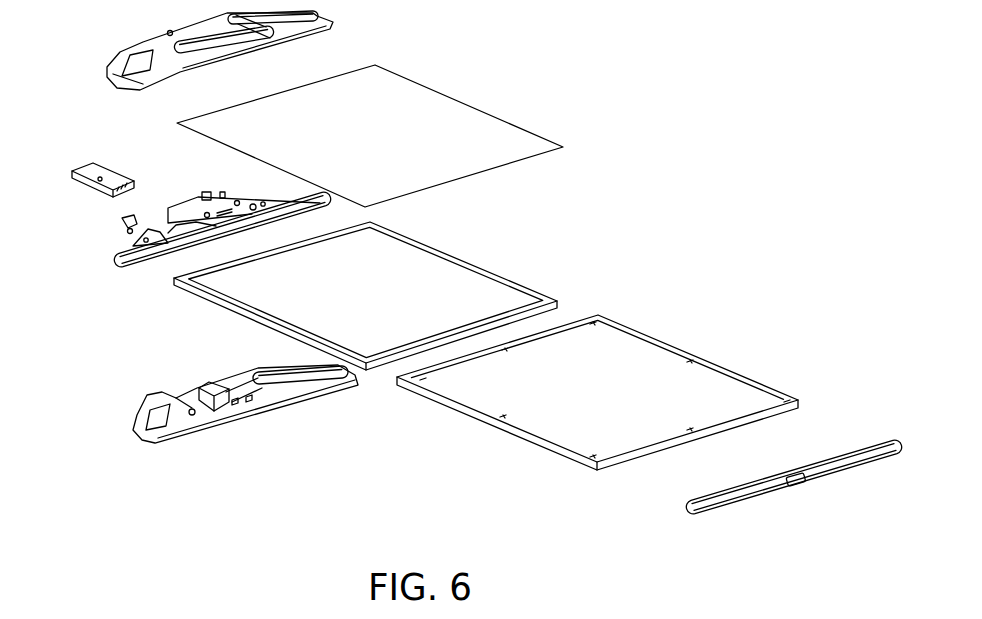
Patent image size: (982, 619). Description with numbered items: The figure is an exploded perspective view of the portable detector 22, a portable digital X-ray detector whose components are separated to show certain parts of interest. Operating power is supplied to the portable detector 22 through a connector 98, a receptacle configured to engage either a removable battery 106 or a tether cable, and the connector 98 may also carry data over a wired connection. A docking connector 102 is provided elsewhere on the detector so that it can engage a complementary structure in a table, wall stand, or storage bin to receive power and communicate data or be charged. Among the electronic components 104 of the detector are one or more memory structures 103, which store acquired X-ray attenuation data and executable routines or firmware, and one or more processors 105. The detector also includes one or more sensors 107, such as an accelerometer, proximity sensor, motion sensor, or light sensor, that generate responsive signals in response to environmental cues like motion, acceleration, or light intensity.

The portable detector 22 is at (694, 104).
The connector 98 is at (168, 226).
The docking connector 102 is at (818, 515).
The memory structures 103 is at (232, 238).
The electronic components 104 is at (238, 183).
The processor 105 is at (262, 200).
The removable battery 106 is at (90, 192).
The sensors 107 is at (136, 233).